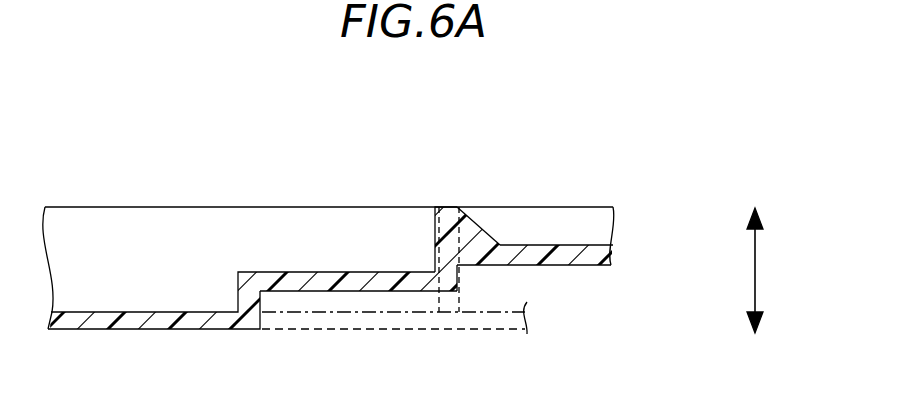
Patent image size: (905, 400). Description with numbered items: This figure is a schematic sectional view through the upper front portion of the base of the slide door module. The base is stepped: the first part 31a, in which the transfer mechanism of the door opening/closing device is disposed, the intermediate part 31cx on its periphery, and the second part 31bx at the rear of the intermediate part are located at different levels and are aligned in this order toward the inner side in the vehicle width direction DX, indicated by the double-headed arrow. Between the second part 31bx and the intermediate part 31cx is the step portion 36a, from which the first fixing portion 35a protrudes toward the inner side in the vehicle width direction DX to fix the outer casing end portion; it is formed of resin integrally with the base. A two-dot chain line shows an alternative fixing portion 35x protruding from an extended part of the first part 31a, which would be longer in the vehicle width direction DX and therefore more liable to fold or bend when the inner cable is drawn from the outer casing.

The first part 31a is at (158, 322).
The intermediate part 31cx is at (352, 292).
The second part 31bx is at (585, 258).
The first fixing portion 35a is at (470, 234).
The fixing portion 35x is at (445, 207).
The step portion 36a is at (433, 238).
The vehicle width direction DX is at (771, 270).